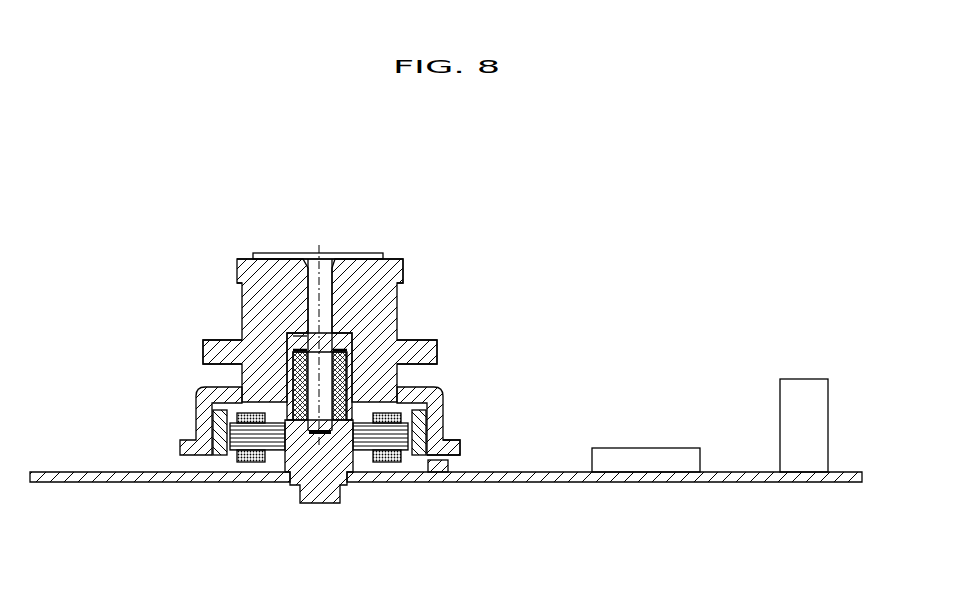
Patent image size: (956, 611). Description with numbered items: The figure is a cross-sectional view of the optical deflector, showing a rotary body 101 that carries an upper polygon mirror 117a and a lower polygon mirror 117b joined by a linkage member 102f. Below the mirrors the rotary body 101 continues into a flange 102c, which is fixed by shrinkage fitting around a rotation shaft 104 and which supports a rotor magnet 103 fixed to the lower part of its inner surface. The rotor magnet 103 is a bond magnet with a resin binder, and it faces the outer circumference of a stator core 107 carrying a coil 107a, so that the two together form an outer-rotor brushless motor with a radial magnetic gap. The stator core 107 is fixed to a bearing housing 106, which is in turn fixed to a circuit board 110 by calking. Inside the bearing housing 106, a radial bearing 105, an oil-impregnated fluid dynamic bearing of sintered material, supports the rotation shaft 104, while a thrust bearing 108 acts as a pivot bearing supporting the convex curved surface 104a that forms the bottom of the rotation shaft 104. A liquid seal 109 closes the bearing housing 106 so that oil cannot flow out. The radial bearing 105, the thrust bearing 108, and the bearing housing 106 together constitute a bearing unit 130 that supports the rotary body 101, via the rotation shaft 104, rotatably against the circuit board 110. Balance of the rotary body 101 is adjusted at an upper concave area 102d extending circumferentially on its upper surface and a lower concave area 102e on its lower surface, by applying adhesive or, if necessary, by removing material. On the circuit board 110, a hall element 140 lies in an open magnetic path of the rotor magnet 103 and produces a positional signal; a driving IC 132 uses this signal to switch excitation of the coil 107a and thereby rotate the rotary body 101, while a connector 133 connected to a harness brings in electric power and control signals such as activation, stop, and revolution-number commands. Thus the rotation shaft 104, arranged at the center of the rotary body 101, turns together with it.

The rotary body 101 is at (384, 220).
The flange 102c is at (445, 388).
The upper concave area 102d is at (273, 253).
The lower concave area 102e is at (452, 442).
The linkage member 102f is at (398, 307).
The rotor magnet 103 is at (213, 427).
The rotation shaft 104 is at (327, 253).
The convex curved surface 104a is at (318, 438).
The radial bearing 105 is at (343, 404).
The bearing housing 106 is at (349, 412).
The stator core 107 is at (233, 461).
The coil 107a is at (257, 463).
The thrust bearing 108 is at (325, 446).
The liquid seal 109 is at (295, 337).
The circuit board 110 is at (574, 483).
The polygon mirror 117a is at (403, 268).
The polygon mirror 117b is at (440, 348).
The bearing unit 130 is at (418, 510).
The driving IC 132 is at (690, 448).
The connector 133 is at (818, 381).
The hall element 140 is at (438, 466).